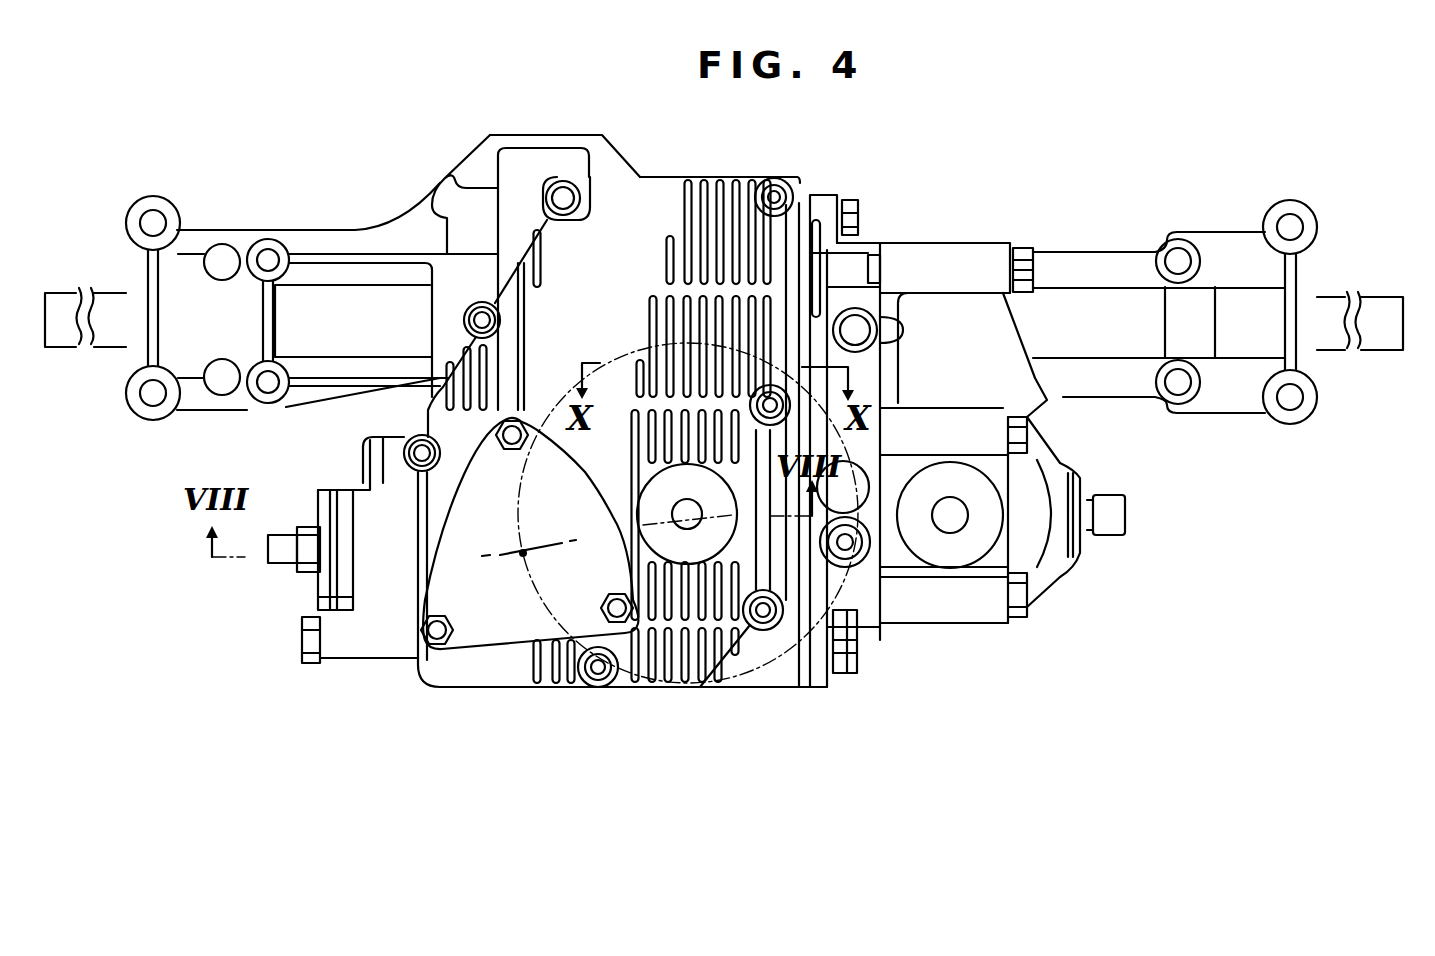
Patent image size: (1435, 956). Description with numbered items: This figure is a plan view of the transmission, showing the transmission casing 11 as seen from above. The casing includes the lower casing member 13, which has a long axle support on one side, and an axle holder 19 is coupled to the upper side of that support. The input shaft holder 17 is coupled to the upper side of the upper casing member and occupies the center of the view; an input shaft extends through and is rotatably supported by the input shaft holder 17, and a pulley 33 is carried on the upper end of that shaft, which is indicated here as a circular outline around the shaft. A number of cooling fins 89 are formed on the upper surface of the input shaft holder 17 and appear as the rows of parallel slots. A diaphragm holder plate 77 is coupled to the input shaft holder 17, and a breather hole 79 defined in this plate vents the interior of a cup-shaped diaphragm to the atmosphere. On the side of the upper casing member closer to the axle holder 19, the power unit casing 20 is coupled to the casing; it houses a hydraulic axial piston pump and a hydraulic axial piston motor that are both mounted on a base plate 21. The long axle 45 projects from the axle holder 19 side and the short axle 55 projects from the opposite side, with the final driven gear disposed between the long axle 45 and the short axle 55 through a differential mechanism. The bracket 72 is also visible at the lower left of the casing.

The transmission casing 11 is at (382, 686).
The lower casing member 13 is at (407, 220).
The input shaft holder 17 is at (705, 228).
The axle holder 19 is at (1096, 298).
The power unit casing 20 is at (1065, 560).
The base plate 21 is at (845, 412).
The pulley 33 is at (772, 655).
The long axle 45 is at (1370, 298).
The short axle 55 is at (96, 350).
The mounting bracket 72 is at (365, 628).
The diaphragm holder plate 77 is at (500, 632).
The breather hole 79 is at (522, 550).
The cooling fins 89 is at (755, 263).